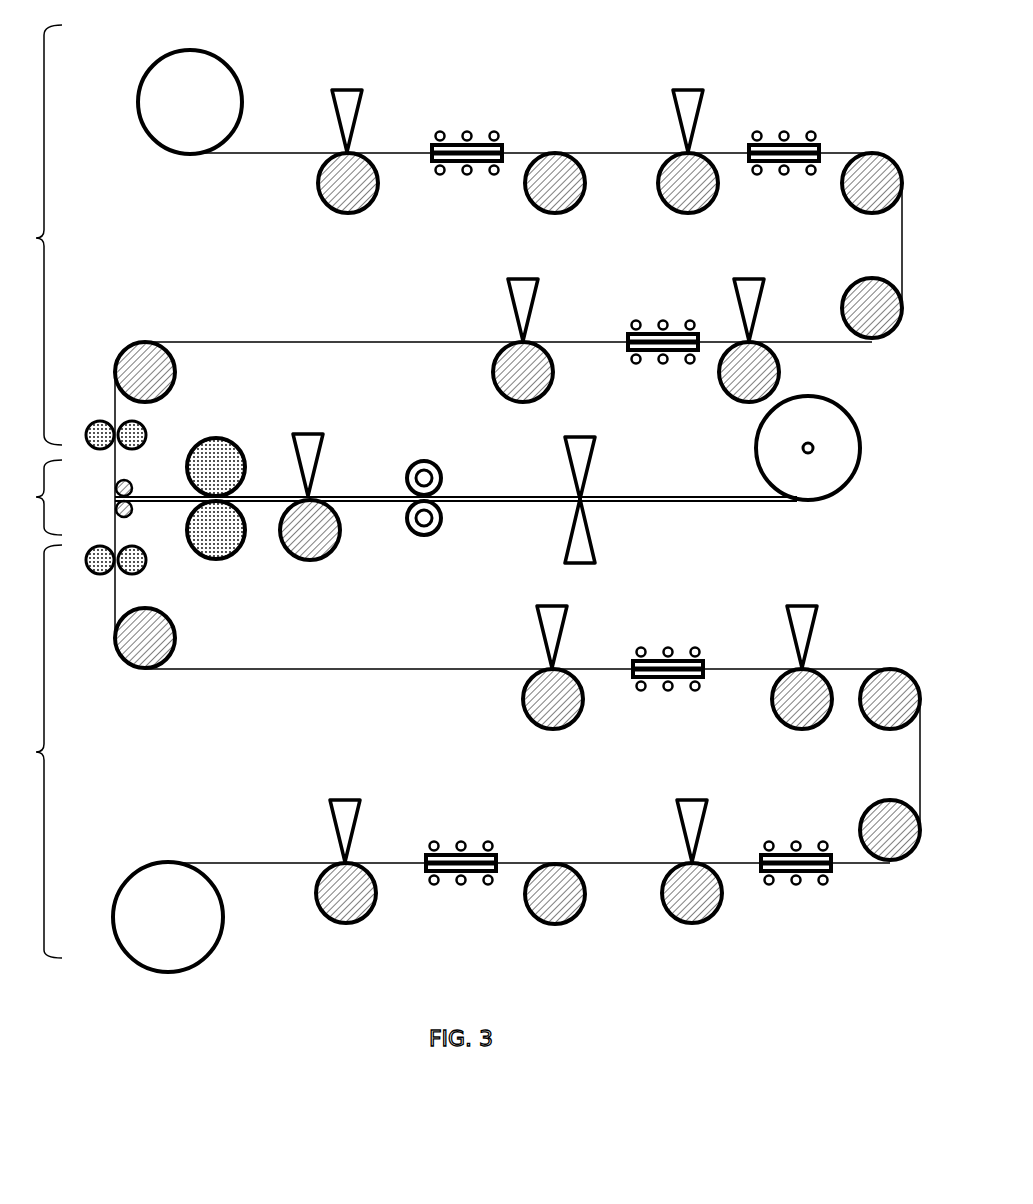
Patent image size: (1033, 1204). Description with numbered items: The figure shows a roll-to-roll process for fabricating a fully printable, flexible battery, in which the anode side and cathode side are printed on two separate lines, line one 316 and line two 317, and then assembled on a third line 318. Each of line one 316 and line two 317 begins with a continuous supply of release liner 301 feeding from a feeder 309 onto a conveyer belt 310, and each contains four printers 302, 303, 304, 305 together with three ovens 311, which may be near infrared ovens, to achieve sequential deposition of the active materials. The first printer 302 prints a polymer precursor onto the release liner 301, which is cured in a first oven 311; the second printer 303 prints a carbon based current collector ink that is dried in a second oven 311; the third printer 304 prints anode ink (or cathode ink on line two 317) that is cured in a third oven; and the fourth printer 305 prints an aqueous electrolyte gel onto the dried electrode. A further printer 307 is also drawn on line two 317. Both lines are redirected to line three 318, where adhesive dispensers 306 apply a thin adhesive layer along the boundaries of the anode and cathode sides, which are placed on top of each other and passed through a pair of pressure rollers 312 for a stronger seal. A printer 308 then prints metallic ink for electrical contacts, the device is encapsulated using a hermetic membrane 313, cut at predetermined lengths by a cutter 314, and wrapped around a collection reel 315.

The release liner 301 is at (517, 497).
The first printer 302 is at (346, 464).
The second printer 303 is at (689, 464).
The third printer 304 is at (749, 298).
The fourth printer 305 is at (537, 462).
The adhesive dispensers 306 is at (103, 500).
The fifth coater 307 is at (802, 623).
The printer 308 is at (308, 454).
The feeder 309 is at (226, 497).
The conveyer belt 310 is at (517, 537).
The ovens 311 is at (628, 497).
The pressure rollers 312 is at (216, 486).
The hermetic membrane 313 is at (422, 487).
The cutter 314 is at (580, 488).
The collection reel 315 is at (827, 448).
The line one 316 is at (32, 235).
The line two 317 is at (32, 751).
The line three 318 is at (32, 497).